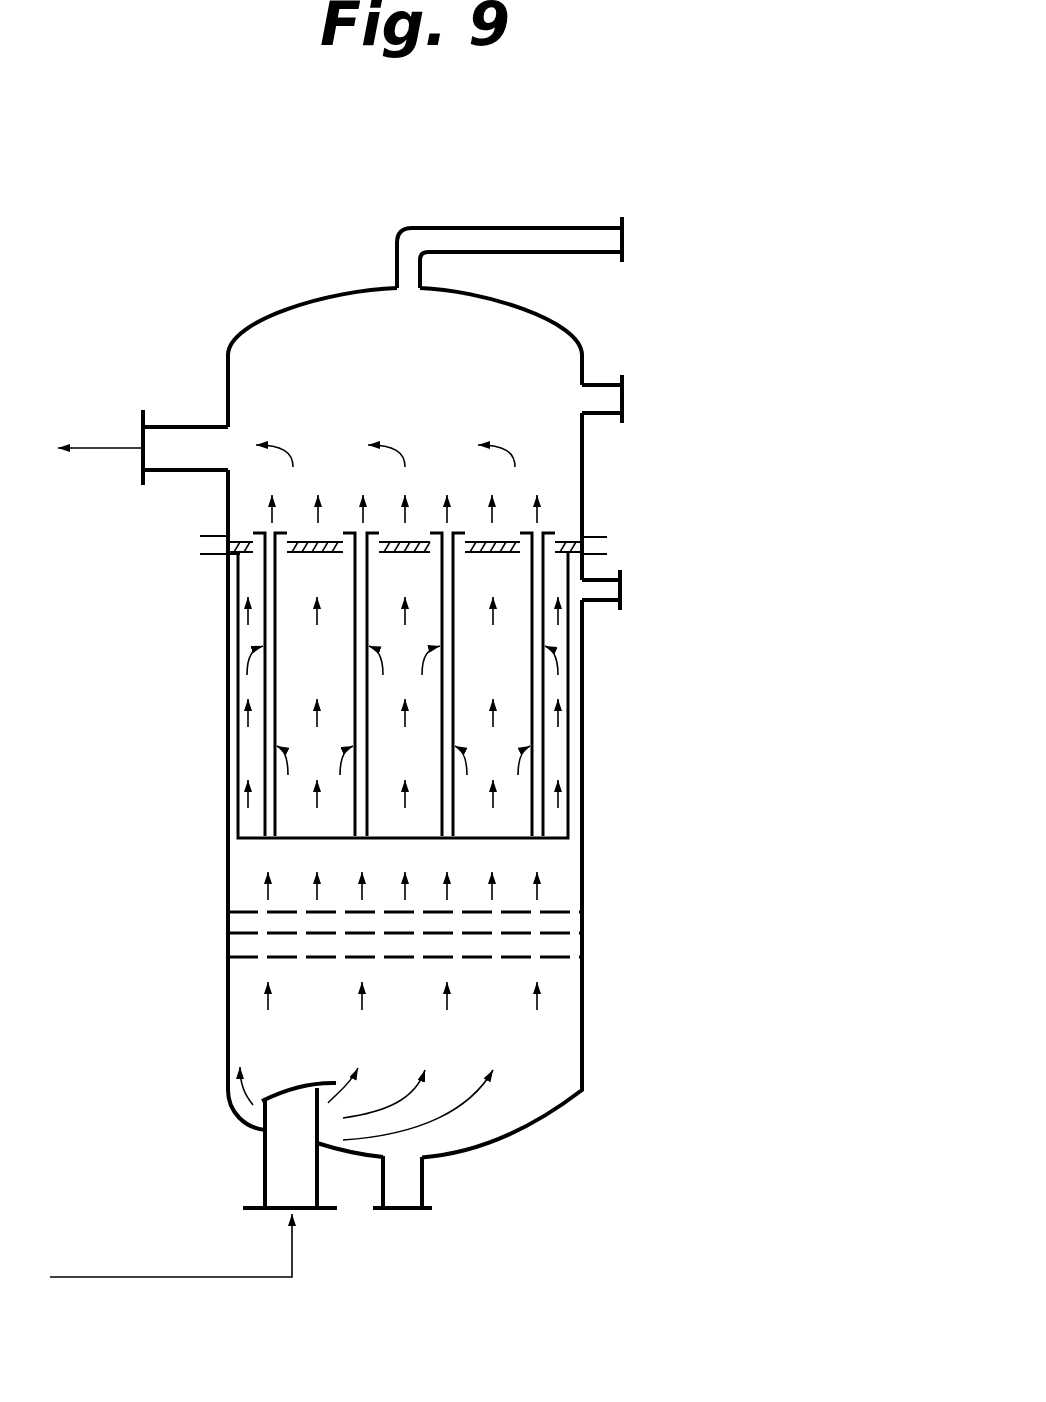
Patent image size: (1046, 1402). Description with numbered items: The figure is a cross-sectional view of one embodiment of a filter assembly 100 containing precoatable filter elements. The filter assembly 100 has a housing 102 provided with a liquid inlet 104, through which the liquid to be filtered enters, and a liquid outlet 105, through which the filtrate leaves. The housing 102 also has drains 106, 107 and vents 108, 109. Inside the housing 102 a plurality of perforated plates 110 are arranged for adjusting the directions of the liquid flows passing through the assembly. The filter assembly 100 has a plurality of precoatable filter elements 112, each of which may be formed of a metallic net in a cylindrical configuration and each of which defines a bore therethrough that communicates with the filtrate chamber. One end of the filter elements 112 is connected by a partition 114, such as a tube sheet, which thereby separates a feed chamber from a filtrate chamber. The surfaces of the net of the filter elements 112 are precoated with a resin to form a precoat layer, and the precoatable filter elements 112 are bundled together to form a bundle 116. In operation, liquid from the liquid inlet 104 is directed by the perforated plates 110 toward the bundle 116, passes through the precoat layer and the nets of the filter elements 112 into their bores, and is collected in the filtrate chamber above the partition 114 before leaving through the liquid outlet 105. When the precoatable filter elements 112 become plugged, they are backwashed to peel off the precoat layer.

The filter assembly 100 is at (750, 1217).
The housing 102 is at (578, 1100).
The liquid inlet 104 is at (266, 1176).
The liquid outlet 105 is at (190, 427).
The drain 106 is at (423, 1180).
The drain 107 is at (600, 385).
The vent 108 is at (600, 580).
The vent 109 is at (597, 227).
The perforated plates 110 is at (588, 950).
The precoatable filter elements 112 is at (543, 680).
The partition 114 is at (487, 540).
The bundle 116 is at (570, 808).